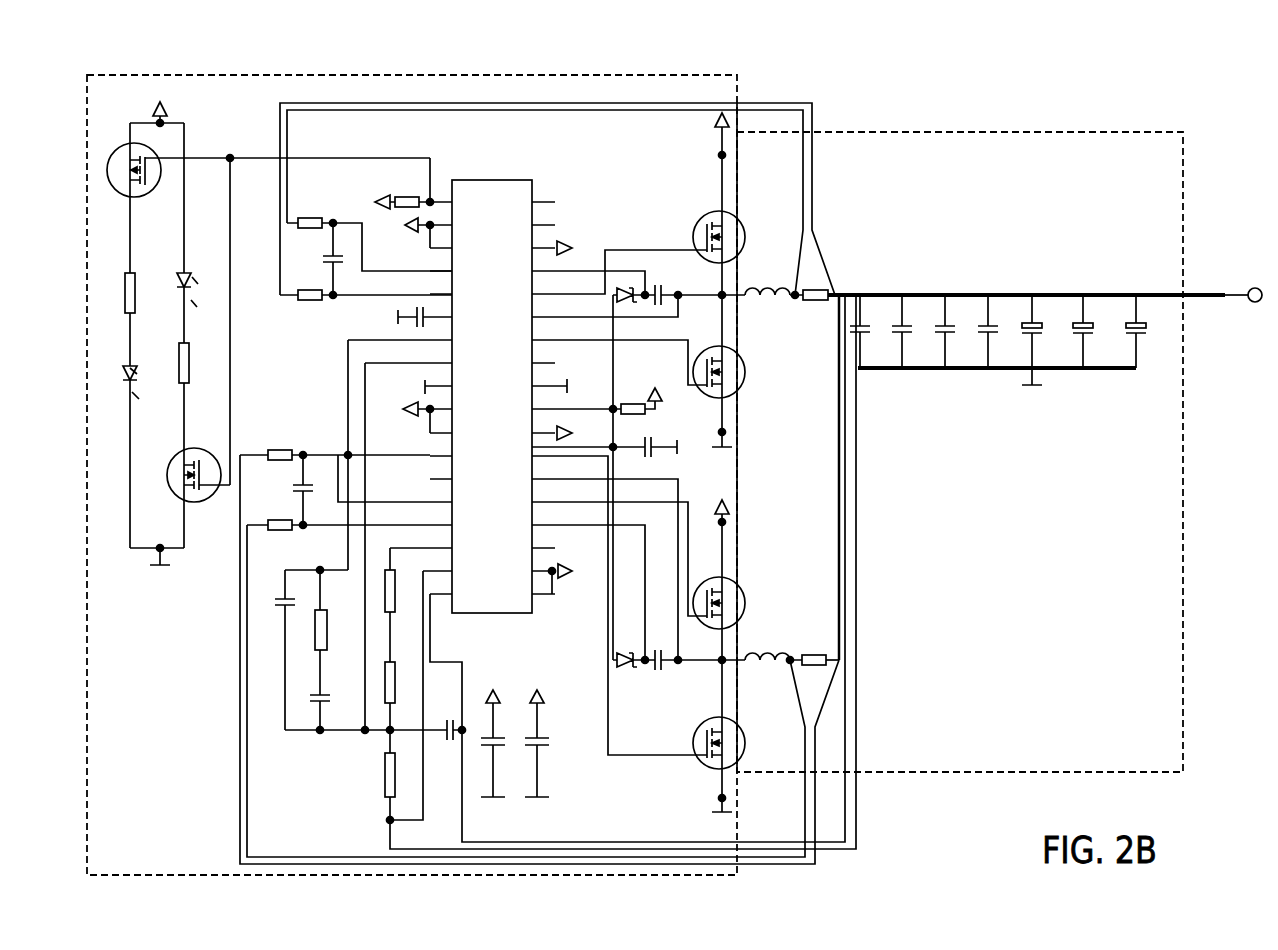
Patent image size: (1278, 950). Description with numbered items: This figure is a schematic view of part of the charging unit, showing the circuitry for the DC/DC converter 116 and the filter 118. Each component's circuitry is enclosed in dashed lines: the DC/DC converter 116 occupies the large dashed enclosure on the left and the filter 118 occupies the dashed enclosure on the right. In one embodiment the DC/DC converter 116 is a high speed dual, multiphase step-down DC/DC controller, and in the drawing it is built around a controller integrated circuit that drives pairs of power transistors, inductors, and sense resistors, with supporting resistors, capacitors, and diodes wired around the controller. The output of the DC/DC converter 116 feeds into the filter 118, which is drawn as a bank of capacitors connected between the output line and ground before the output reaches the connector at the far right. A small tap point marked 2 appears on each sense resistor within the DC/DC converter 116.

The DC/DC converter 116 is at (740, 92).
The filter 118 is at (1074, 131).
The sense resistor tap 2 is at (813, 470).